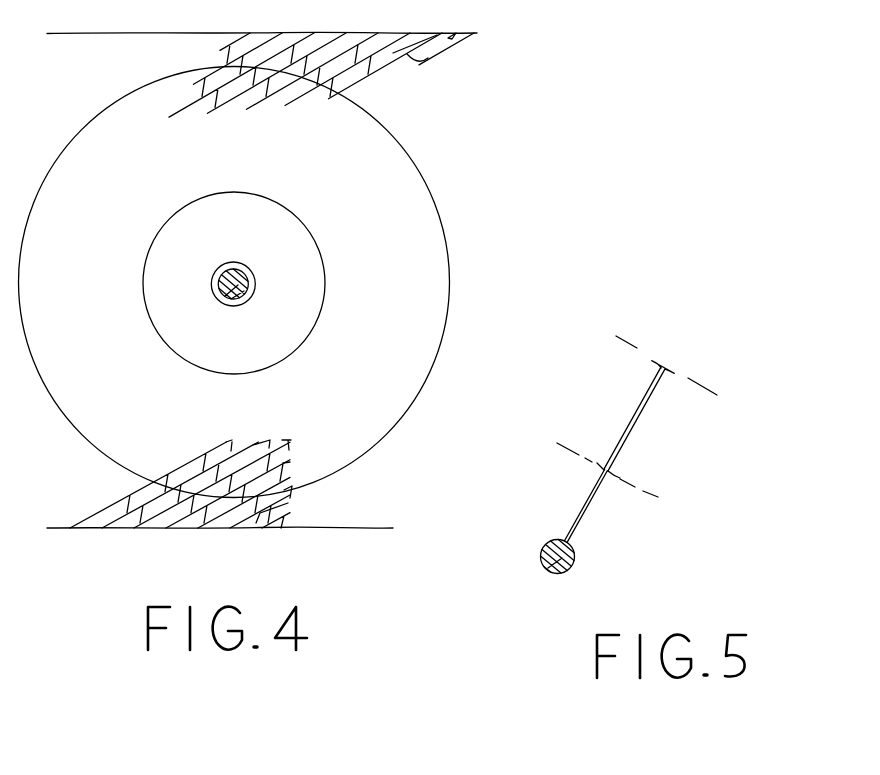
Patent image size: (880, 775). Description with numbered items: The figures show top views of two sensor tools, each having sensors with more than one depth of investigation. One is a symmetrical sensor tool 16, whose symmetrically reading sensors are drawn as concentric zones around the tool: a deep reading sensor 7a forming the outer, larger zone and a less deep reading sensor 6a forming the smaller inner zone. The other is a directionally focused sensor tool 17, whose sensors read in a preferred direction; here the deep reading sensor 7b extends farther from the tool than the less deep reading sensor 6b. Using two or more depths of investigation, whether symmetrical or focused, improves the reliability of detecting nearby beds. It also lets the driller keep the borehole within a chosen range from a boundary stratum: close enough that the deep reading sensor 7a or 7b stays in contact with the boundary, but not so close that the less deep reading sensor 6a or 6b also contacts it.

In FIG. 4, the deep reading sensor 7a is at (332, 171).
In FIG. 4, the less deep reading sensor 6a is at (278, 271).
In FIG. 4, the symmetrical sensor tool 16 is at (215, 300).
In FIG. 5, the deep reading sensor 7b is at (646, 419).
In FIG. 5, the less deep reading sensor 6b is at (589, 512).
In FIG. 5, the directionally focused sensor tool 17 is at (548, 570).